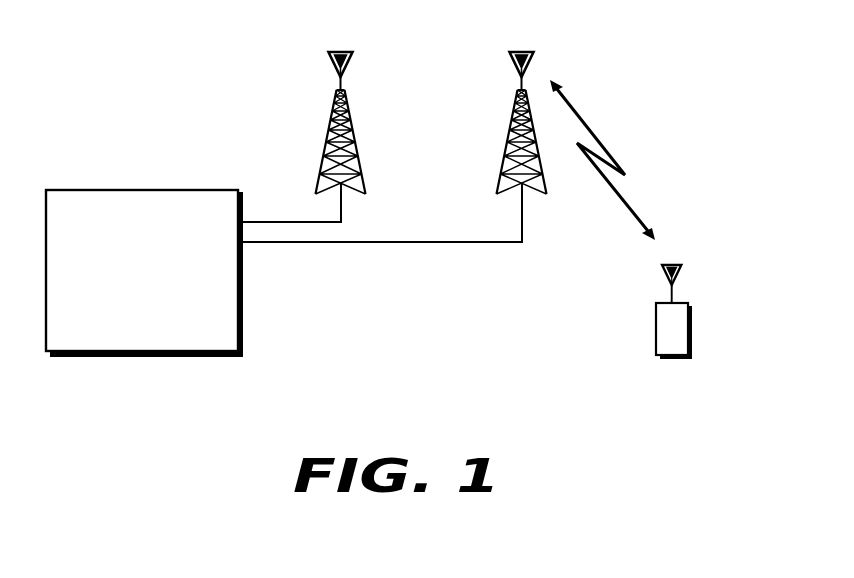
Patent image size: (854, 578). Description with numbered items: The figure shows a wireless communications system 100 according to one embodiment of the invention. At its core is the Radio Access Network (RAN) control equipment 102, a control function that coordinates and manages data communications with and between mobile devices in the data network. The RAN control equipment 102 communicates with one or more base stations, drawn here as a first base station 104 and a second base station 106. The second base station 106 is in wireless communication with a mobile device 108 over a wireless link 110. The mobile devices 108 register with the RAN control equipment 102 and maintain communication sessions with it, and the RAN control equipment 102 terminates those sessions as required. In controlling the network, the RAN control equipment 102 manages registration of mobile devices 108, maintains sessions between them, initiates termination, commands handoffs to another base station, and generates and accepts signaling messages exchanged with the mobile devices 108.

The wireless communications system 100 is at (408, 427).
The Radio Access Network (RAN) control equipment 102 is at (140, 190).
The first base station 104 is at (352, 119).
The second base station 106 is at (510, 120).
The mobile devices 108 is at (692, 322).
The wireless link 110 is at (587, 122).